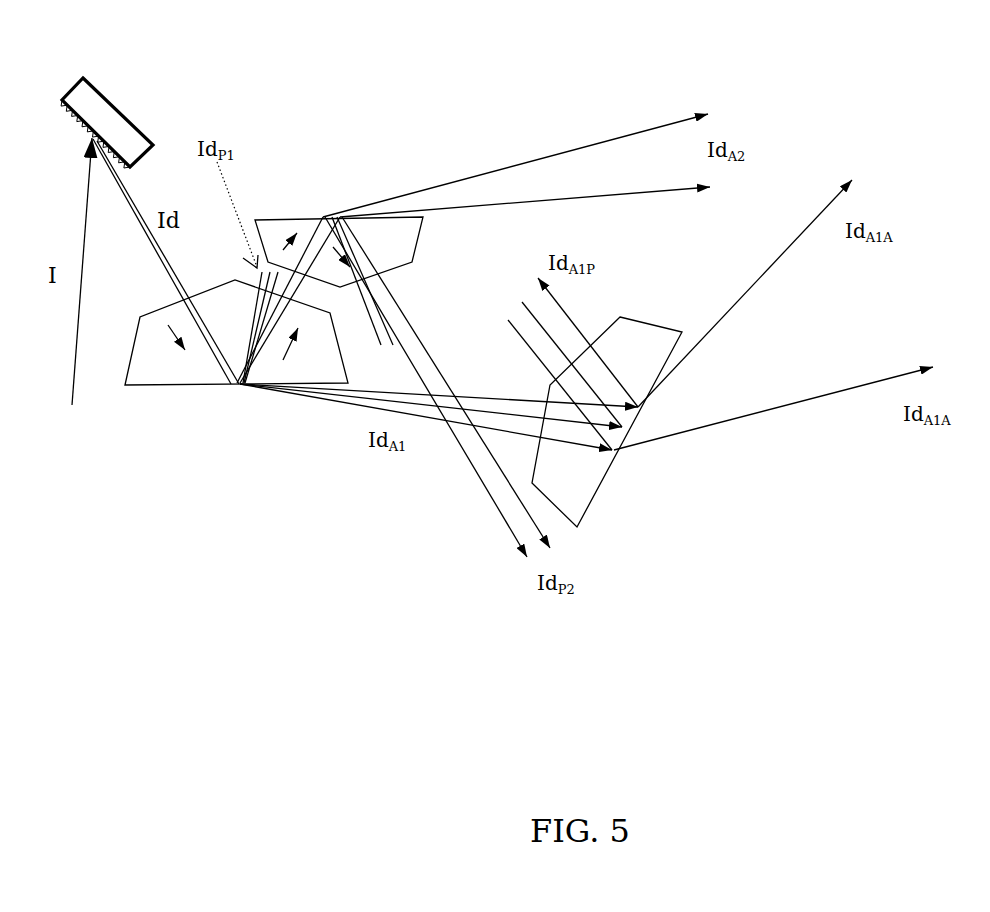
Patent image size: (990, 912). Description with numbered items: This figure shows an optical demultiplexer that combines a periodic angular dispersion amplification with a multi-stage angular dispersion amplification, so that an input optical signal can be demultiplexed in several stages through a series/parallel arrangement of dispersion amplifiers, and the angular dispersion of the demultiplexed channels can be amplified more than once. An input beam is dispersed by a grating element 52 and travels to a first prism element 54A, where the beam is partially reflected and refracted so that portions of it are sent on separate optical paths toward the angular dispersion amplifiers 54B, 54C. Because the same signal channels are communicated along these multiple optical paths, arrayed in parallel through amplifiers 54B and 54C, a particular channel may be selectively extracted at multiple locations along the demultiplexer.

The diffraction grating 52 is at (107, 103).
The first prism 54A is at (236, 352).
The angular dispersion amplifier 54B is at (334, 234).
The angular dispersion amplifier 54C is at (607, 422).